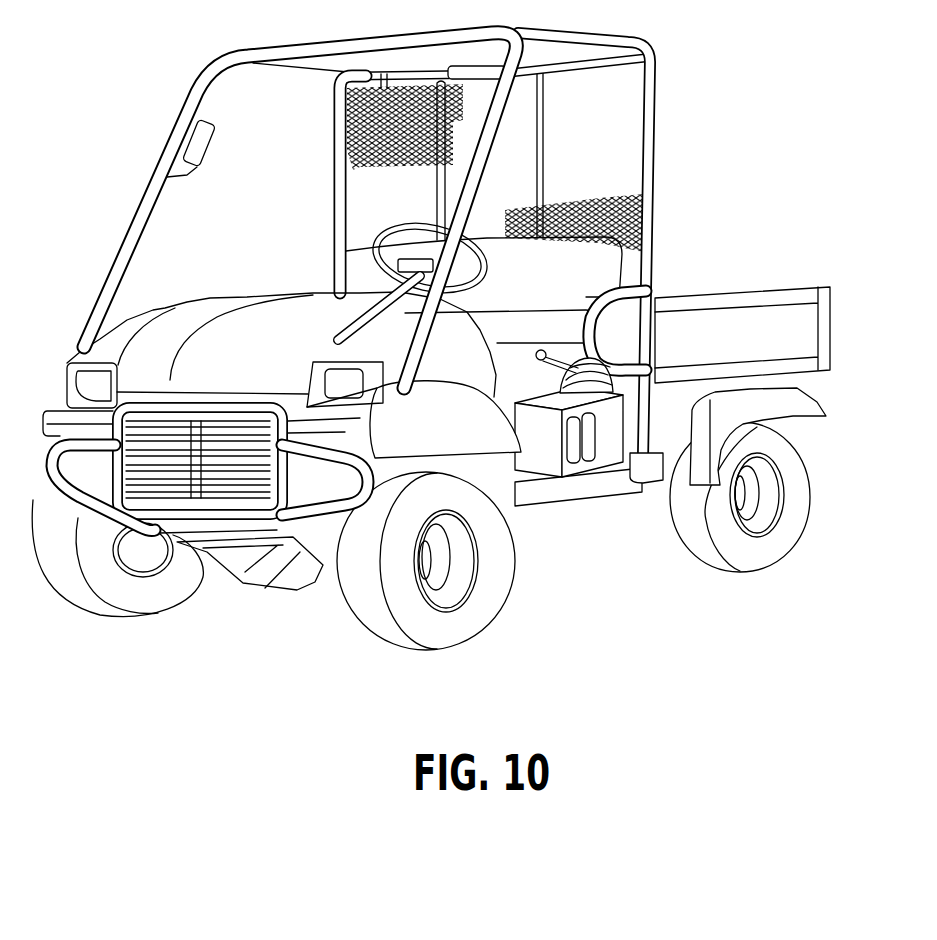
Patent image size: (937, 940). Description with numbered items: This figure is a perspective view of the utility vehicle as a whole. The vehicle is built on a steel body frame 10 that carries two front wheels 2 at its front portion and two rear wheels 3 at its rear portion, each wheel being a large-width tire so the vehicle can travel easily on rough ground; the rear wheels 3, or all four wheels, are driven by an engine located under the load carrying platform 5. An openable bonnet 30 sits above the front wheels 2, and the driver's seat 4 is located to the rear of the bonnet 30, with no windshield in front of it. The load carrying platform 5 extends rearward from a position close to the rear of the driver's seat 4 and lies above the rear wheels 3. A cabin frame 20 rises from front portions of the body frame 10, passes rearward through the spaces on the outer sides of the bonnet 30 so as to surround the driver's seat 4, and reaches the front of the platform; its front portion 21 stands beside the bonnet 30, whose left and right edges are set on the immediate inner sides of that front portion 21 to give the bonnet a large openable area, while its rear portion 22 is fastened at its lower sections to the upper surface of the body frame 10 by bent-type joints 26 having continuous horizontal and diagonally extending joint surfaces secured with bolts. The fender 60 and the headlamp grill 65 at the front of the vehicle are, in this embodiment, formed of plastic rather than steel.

The front wheels 2 is at (452, 590).
The rear wheels 3 is at (767, 507).
The driver's seat 4 is at (593, 267).
The load carrying platform 5 is at (760, 320).
The body frame 10 is at (585, 483).
The cabin frame 20 is at (303, 108).
The front portion 21 is at (213, 78).
The rear portion 22 is at (334, 122).
The joints 26 is at (643, 483).
The bonnet 30 is at (307, 312).
The fender 60 is at (515, 455).
The headlamp grill 65 is at (333, 427).